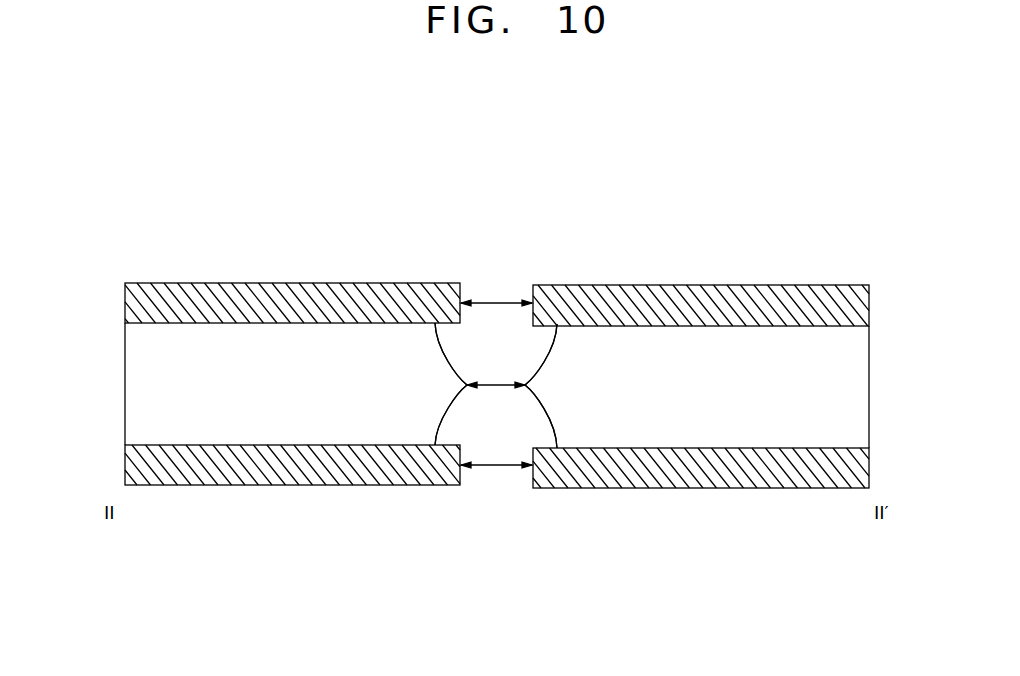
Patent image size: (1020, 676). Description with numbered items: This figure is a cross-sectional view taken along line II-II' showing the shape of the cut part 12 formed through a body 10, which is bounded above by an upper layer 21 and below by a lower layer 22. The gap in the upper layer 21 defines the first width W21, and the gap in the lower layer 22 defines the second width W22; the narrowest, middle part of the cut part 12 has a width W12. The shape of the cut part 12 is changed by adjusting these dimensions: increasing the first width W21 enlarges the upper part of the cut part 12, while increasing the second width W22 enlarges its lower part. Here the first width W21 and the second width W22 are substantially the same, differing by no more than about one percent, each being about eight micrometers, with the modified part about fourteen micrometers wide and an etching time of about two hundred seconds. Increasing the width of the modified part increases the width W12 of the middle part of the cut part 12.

The substrate 10 is at (125, 379).
The cut part 12 is at (503, 370).
The first conductive layer 21 is at (125, 301).
The second conductive layer 22 is at (125, 463).
The first width W21 is at (498, 303).
The width of a middle part of the cut part W12 is at (498, 389).
The second width W22 is at (500, 468).